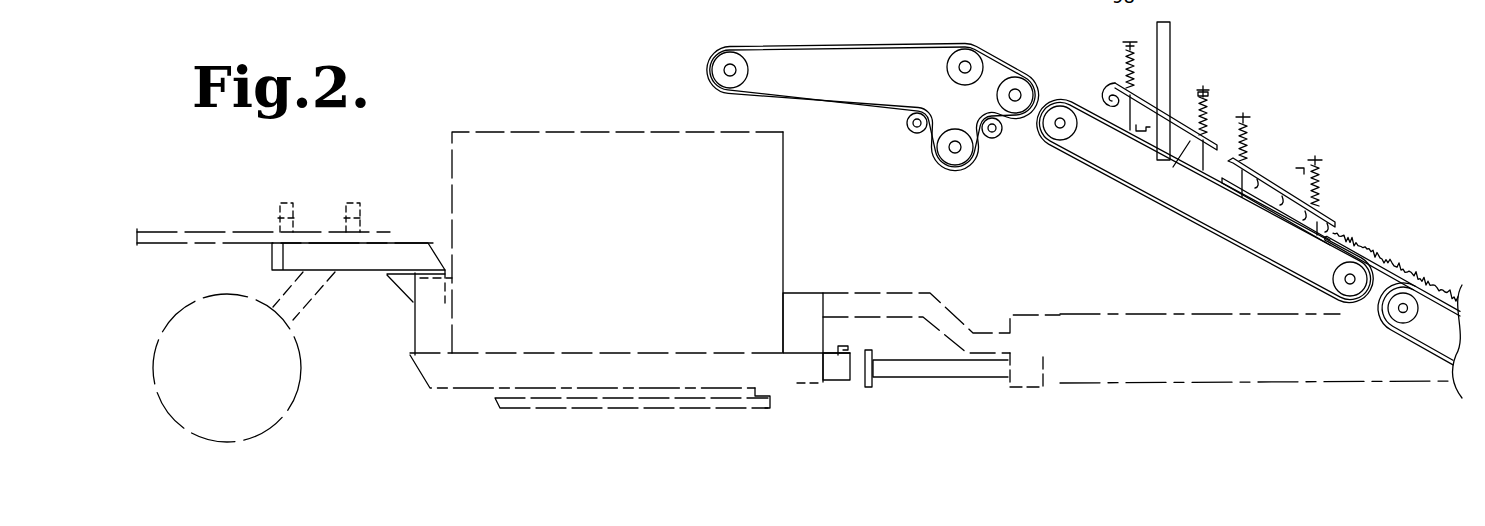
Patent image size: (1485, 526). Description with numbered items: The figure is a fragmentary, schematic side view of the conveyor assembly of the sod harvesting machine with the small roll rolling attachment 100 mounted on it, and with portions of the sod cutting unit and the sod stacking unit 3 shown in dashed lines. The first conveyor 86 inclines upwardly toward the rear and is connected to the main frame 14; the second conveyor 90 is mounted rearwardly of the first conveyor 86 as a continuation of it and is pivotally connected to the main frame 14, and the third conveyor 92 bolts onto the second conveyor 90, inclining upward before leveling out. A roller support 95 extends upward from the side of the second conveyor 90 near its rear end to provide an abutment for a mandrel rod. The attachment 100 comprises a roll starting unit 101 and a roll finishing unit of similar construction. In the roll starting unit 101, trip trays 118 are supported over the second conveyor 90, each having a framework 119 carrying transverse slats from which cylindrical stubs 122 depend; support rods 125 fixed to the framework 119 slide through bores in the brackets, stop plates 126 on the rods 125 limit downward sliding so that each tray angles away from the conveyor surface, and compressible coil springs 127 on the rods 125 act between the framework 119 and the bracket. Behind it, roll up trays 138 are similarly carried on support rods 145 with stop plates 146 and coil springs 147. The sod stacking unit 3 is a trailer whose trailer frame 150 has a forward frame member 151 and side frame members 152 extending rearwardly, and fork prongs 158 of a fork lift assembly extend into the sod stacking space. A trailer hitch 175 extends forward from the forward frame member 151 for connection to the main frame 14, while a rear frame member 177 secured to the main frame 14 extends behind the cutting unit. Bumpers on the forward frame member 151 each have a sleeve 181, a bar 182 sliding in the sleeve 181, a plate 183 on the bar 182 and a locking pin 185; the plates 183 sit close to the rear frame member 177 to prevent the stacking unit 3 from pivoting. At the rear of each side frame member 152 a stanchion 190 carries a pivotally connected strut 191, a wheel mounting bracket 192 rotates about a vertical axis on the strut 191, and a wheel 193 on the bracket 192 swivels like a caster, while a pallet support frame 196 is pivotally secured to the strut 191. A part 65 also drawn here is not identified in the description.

The sod stacking unit 3 is at (525, 120).
The main frame 14 is at (1096, 374).
The frame member 65 is at (783, 186).
The first conveyor 86 is at (1436, 345).
The second conveyor 90 is at (1182, 200).
The third conveyor 92 is at (815, 60).
The roller support 95 is at (1170, 25).
The small roll rolling attachment 100 is at (1253, 64).
The roll starting unit 101 is at (1347, 158).
The trip tray 118 is at (1297, 233).
The framework 119 is at (1335, 225).
The stubs 122 is at (1292, 210).
The support rods 125 is at (1318, 158).
The stop plate 126 is at (1315, 150).
The compressible coil spring 127 is at (1300, 170).
The roll up tray 138 is at (1188, 146).
The support rods 145 is at (1203, 87).
The stop plate 146 is at (1209, 90).
The compressible coil spring 147 is at (1188, 100).
The trailer frame 150 is at (787, 388).
The forward frame member 151 is at (800, 292).
The side frame members 152 is at (683, 362).
The fork prongs 158 is at (582, 410).
The trailer hitch 175 is at (905, 293).
The rear frame member 177 is at (950, 383).
The sleeve 181 is at (840, 383).
The bar 182 is at (855, 383).
The plate 183 is at (870, 387).
The locking pin 185 is at (840, 350).
The stanchion 190 is at (410, 323).
The strut 191 is at (410, 242).
The wheel mounting bracket 192 is at (282, 295).
The wheel 193 is at (293, 390).
The pallet support frame 196 is at (215, 231).